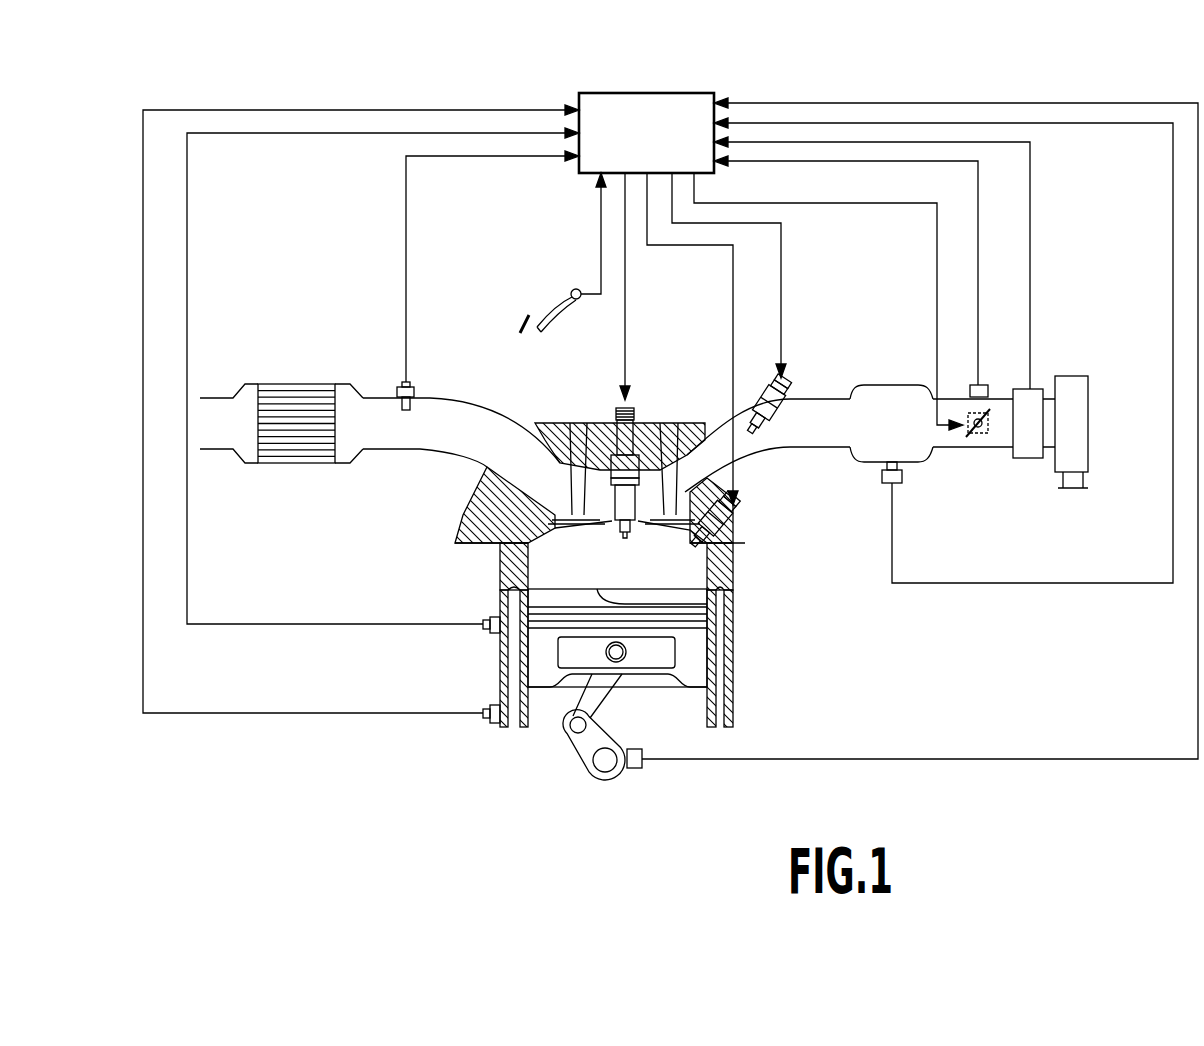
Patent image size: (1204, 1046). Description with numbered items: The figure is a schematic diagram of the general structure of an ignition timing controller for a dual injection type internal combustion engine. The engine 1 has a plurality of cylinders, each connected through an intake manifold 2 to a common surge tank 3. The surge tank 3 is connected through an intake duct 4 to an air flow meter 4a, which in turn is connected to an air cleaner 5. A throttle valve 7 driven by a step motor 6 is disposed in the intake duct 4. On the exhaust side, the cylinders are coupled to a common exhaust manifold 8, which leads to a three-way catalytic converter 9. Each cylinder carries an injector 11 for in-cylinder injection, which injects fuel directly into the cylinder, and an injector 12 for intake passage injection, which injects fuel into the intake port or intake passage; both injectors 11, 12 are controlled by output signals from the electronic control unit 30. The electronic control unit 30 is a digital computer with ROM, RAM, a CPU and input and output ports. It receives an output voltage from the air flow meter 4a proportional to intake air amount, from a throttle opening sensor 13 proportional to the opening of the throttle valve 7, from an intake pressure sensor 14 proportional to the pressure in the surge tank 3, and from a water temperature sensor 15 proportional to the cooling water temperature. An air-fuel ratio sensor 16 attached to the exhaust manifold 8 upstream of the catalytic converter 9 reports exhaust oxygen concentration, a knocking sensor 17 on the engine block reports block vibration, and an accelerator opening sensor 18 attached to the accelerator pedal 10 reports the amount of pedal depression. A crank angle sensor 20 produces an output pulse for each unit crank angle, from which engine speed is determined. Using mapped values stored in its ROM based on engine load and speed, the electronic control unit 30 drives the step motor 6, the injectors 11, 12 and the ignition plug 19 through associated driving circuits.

The engine 1 is at (546, 798).
The intake manifold 2 is at (767, 457).
The surge tank 3 is at (893, 385).
The intake duct 4 is at (1003, 449).
The air flow meter 4a is at (1033, 460).
The air cleaner 5 is at (1072, 376).
The step motor 6 is at (991, 443).
The throttle valve 7 is at (988, 410).
The exhaust manifold 8 is at (447, 397).
The three-way catalytic converter 9 is at (293, 383).
The accelerator pedal 10 is at (528, 320).
The injector for in-cylinder injection 11 is at (740, 528).
The injector for intake passage injection 12 is at (786, 378).
The throttle opening sensor 13 is at (975, 385).
The intake pressure sensor 14 is at (896, 484).
The water temperature sensor 15 is at (488, 617).
The air-fuel ratio sensor 16 is at (400, 386).
The knocking sensor 17 is at (488, 707).
The accelerator opening sensor 18 is at (572, 288).
The ignition plug 19 is at (636, 400).
The crank angle sensor 20 is at (642, 770).
The electronic control unit 30 is at (632, 92).